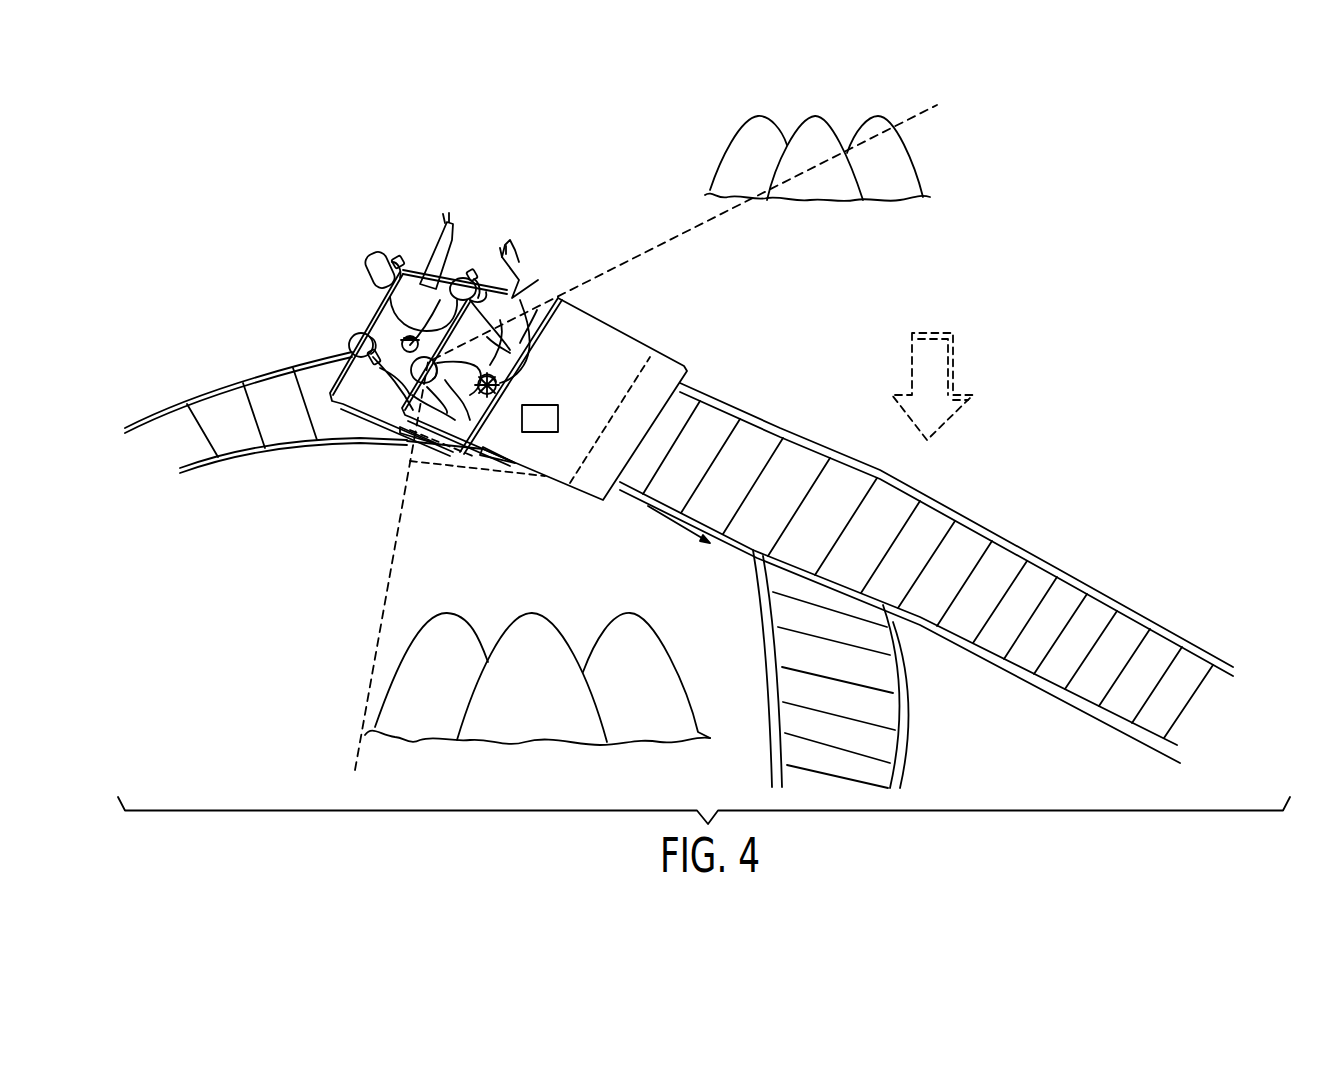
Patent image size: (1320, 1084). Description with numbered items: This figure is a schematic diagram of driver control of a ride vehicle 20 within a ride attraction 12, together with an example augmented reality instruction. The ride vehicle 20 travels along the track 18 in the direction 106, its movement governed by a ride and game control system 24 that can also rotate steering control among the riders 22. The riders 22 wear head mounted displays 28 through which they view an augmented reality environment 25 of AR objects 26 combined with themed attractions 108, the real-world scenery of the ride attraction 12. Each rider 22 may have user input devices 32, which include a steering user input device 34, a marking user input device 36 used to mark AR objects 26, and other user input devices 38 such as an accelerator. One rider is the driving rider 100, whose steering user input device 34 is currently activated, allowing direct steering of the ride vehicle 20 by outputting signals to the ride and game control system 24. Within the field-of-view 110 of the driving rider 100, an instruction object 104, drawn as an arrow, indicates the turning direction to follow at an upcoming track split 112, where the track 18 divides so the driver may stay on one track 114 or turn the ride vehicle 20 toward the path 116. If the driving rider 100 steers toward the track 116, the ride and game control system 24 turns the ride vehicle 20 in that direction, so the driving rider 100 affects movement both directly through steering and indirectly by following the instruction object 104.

The ride attraction 12 is at (1140, 128).
The track 18 is at (748, 404).
The ride vehicle 20 is at (607, 343).
The riders 22 is at (373, 260).
The ride and game control system 24 is at (540, 433).
The augmented reality (AR) environment 25 is at (1050, 240).
The AR objects 26 is at (947, 316).
The head mounted displays 28 is at (399, 256).
The user input devices 32 is at (487, 385).
The steering user input device 34 is at (498, 388).
The marking user input device 36 is at (398, 340).
The other user input devices 38 is at (470, 455).
The driving rider 100 is at (445, 466).
The instruction object 104 is at (957, 357).
The direction 106 is at (663, 518).
The themed attractions 108 is at (743, 143).
The field-of-view 110 is at (618, 265).
The track split 112 is at (910, 645).
The track portion 114 is at (1088, 576).
The path 116 is at (905, 748).